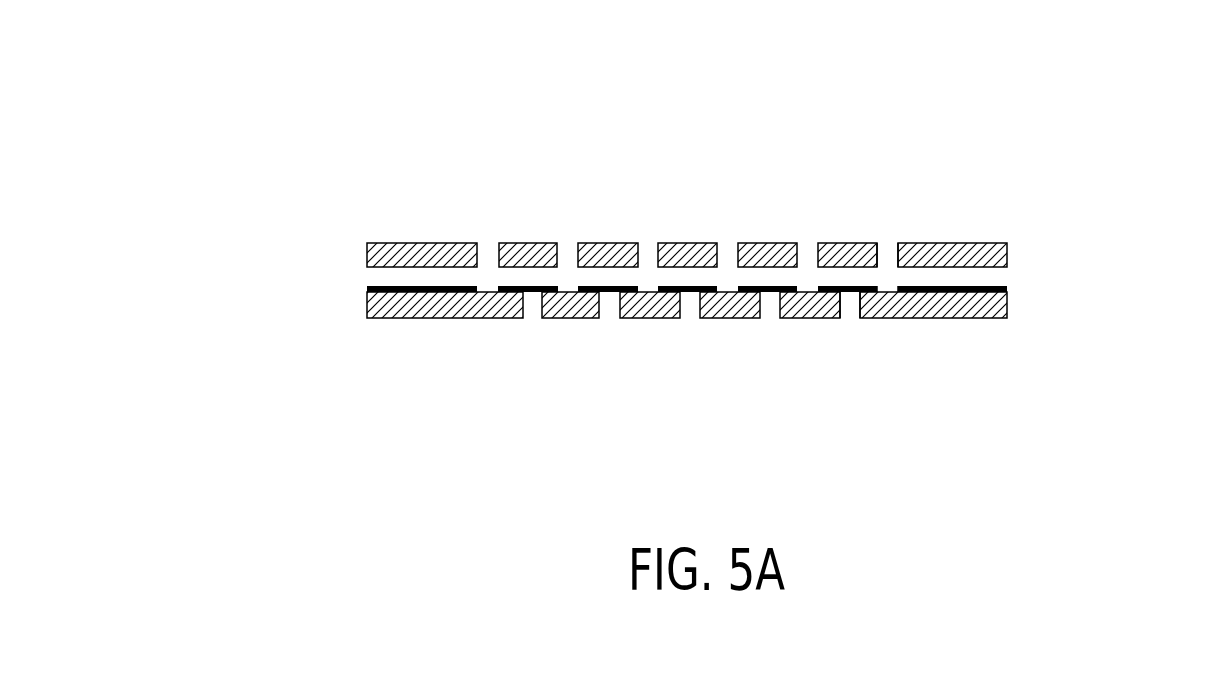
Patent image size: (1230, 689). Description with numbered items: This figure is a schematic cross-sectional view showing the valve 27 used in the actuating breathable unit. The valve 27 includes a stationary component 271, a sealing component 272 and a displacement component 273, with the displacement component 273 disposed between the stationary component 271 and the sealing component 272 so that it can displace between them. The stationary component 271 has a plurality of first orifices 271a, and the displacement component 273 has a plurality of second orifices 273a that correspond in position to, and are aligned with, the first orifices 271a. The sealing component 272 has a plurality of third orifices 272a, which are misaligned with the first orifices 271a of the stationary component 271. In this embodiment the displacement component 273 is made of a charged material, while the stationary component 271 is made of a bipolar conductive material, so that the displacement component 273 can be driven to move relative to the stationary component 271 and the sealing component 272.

The valve 27 is at (1202, 55).
The stationary component 271 is at (1007, 257).
The first orifices 271a is at (887, 257).
The sealing component 272 is at (1003, 318).
The third orifices 272a is at (845, 310).
The displacement component 273 is at (1007, 288).
The second orifices 273a is at (897, 287).